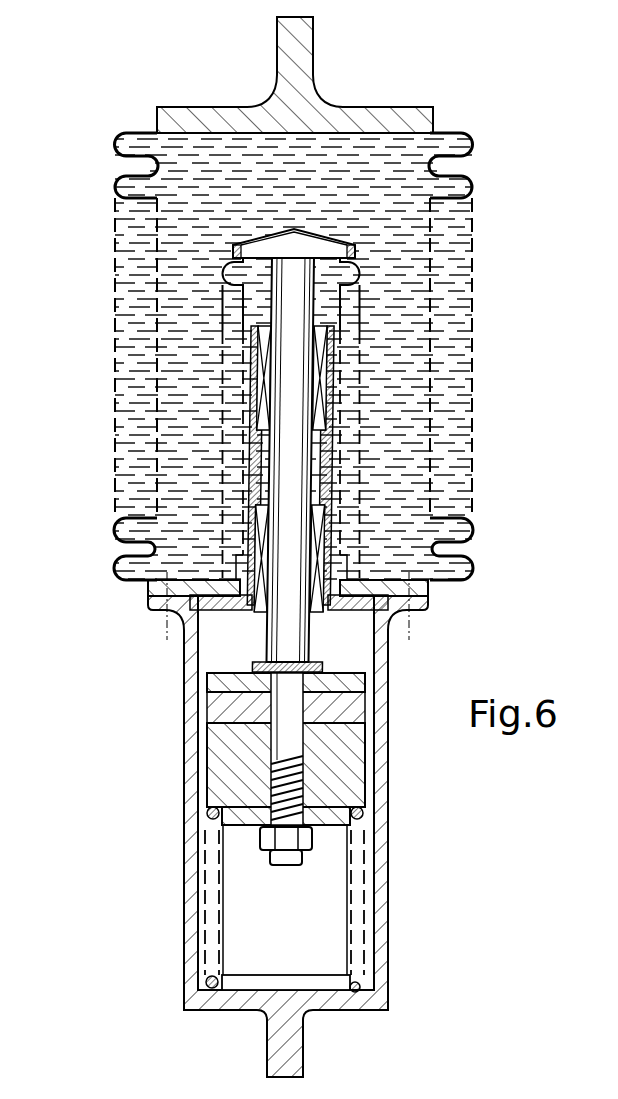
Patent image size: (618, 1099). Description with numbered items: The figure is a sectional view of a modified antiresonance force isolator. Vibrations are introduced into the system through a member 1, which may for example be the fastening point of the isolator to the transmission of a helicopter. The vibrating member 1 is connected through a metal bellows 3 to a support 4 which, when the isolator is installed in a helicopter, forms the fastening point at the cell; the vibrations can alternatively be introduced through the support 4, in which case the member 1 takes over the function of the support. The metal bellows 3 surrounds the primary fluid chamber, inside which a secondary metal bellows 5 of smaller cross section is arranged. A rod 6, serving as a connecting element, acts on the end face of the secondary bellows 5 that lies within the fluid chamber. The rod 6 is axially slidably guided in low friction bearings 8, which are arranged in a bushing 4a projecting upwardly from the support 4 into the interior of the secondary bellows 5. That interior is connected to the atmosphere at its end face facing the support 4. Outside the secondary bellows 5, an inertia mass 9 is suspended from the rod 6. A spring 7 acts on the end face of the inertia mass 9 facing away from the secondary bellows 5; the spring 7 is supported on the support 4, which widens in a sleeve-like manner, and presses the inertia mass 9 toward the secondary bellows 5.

The member 1 is at (285, 50).
The metal bellows 3 is at (130, 268).
The support 4 is at (278, 1036).
The bushing 4a is at (252, 334).
The secondary metal bellows 5 is at (230, 383).
The rod 6 is at (286, 630).
The spring 7 is at (213, 900).
The low friction bearings 8 is at (264, 512).
The inertia mass 9 is at (225, 745).